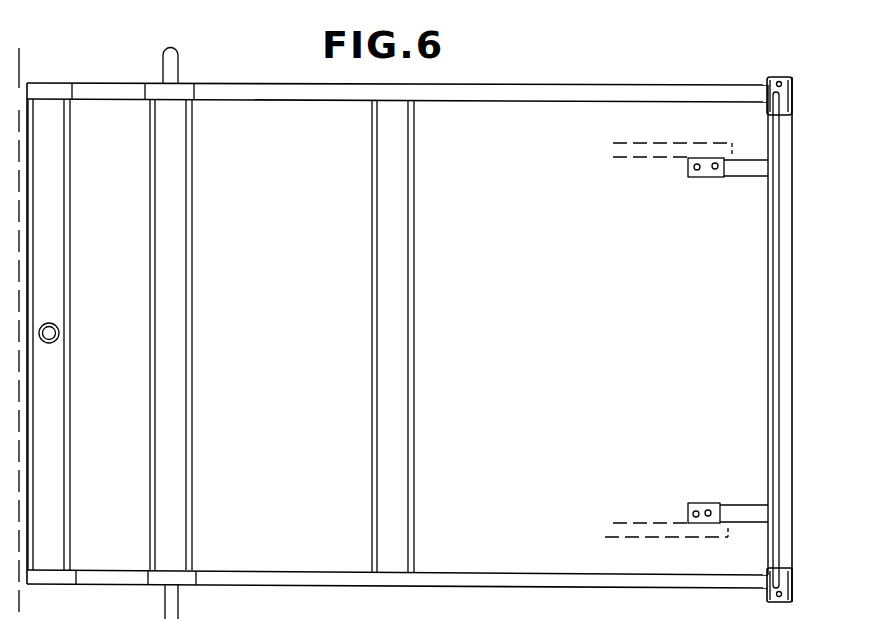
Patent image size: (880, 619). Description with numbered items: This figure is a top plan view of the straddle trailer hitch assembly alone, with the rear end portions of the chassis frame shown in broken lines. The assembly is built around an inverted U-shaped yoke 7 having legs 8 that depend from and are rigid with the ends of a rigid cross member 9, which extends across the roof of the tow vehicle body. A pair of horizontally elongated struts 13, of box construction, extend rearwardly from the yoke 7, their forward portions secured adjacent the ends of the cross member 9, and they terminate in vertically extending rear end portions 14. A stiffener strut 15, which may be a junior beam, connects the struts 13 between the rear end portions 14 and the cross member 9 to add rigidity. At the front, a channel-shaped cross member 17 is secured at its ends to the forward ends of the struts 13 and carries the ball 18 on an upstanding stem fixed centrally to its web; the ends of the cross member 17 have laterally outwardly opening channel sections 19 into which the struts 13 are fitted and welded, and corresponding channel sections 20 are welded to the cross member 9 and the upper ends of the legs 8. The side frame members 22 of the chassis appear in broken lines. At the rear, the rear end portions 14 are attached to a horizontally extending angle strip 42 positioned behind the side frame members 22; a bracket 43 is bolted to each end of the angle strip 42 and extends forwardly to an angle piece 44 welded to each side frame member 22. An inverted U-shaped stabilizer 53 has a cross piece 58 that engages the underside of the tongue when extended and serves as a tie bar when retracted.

The yoke 7 is at (19, 46).
The legs 8 is at (178, 70).
The cross member 9 is at (181, 320).
The struts 13 is at (310, 97).
The rear end portions 14 is at (756, 111).
The stiffener strut 15 is at (398, 337).
The cross member 17 is at (57, 262).
The ball 18 is at (59, 333).
The channel sections 19 is at (63, 578).
The channel sections 20 is at (168, 580).
The side frame members 22 is at (664, 157).
The angle strip 42 is at (792, 460).
The bracket 43 is at (746, 168).
The angle piece 44 is at (708, 173).
The stabilizer 53 is at (766, 368).
The cross piece 58 is at (775, 292).